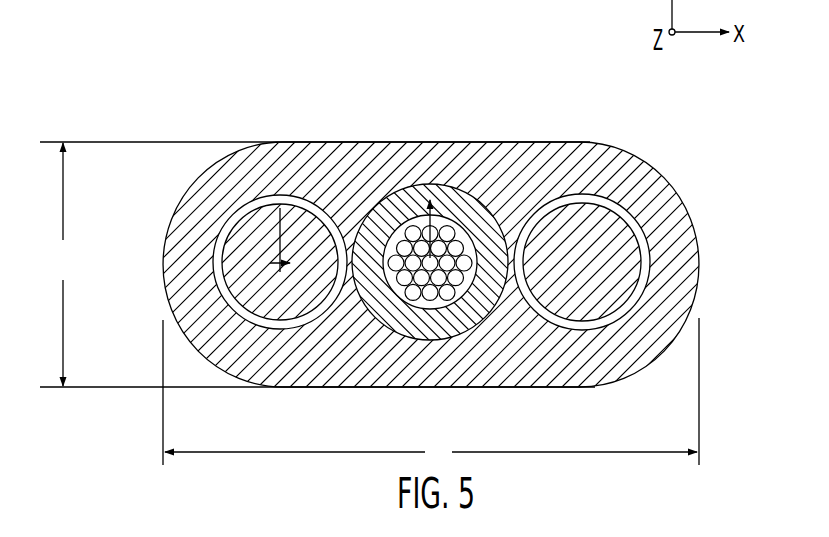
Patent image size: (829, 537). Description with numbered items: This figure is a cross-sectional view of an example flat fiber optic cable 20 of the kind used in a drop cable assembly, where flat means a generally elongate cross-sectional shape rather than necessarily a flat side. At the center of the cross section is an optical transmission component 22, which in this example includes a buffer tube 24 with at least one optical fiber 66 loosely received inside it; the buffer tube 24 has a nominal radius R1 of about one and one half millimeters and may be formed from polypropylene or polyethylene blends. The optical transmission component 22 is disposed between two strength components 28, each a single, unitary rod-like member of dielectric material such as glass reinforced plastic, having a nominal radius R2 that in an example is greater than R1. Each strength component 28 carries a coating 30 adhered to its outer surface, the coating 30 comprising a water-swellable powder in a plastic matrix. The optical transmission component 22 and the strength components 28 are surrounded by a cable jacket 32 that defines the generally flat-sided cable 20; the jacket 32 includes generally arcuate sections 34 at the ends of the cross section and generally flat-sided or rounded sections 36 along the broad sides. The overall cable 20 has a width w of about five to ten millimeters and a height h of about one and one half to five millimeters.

The cable 20 is at (414, 234).
The optical transmission component 22 is at (366, 327).
The buffer tube 24 is at (448, 236).
The strength components 28 is at (250, 199).
The coating 30 is at (648, 248).
The cable jacket 32 is at (654, 319).
The arcuate sections 34 is at (181, 329).
The flat-sided or rounded sections 36 is at (428, 190).
The optical fiber 66 is at (485, 204).
The nominal radius of buffer tube R1 is at (400, 186).
The nominal radius of strength components R2 is at (272, 240).
The height of cable h is at (317, 264).
The width of cable w is at (431, 391).